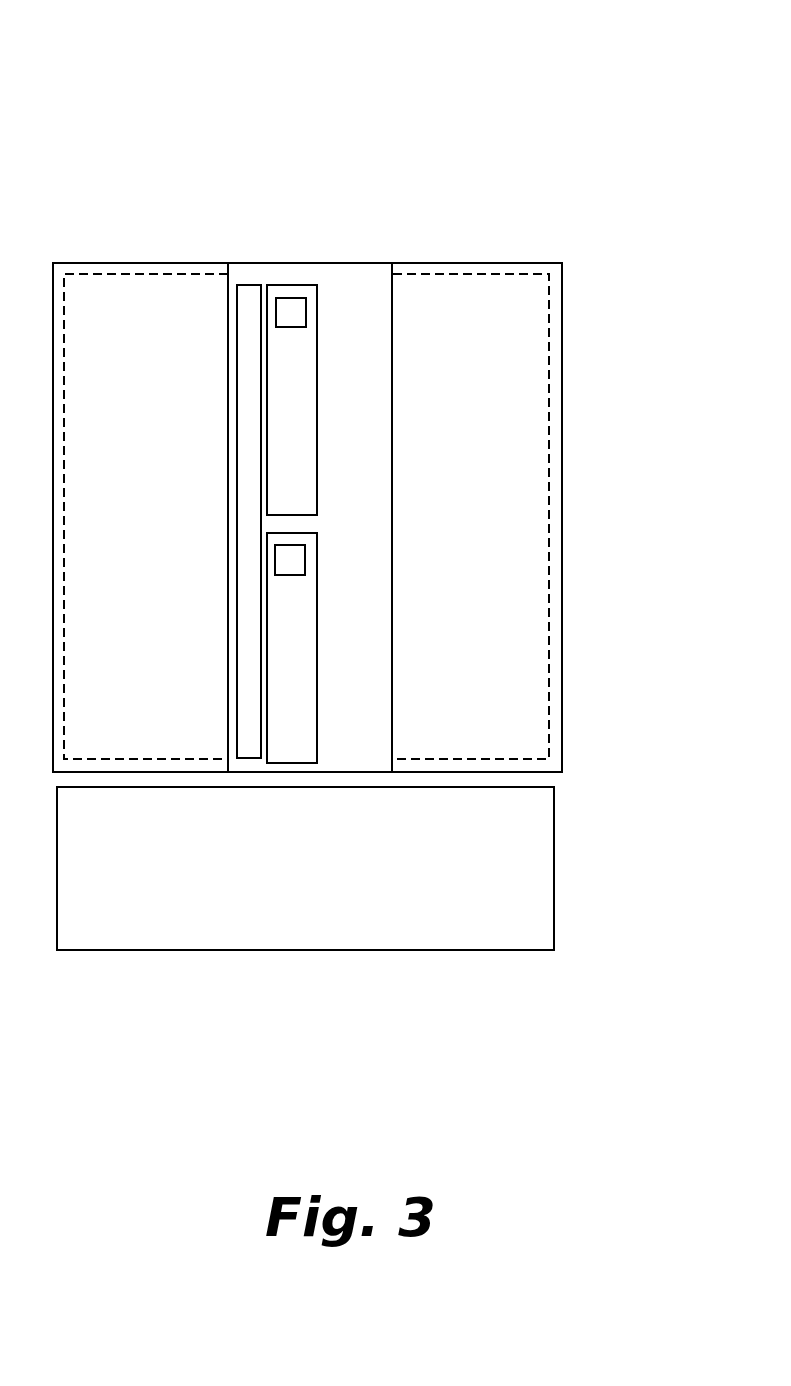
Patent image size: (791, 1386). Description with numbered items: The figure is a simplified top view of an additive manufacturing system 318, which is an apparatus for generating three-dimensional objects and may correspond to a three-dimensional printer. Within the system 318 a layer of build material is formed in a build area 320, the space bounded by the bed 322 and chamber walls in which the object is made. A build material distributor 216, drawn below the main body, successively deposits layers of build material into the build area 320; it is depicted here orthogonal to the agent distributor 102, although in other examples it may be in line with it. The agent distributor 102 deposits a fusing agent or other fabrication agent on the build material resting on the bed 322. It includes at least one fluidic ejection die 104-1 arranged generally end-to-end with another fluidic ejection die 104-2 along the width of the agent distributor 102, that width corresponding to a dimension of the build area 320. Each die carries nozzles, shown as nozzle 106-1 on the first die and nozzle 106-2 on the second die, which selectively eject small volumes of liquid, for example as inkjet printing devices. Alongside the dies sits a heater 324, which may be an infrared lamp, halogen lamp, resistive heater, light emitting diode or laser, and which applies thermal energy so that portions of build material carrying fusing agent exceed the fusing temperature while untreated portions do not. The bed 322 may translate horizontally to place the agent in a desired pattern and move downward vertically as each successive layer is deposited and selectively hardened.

The additive manufacturing system 318 is at (299, 86).
The agent distributor 102 is at (322, 272).
The build area 320 is at (88, 305).
The bed 322 is at (156, 268).
The heater 324 is at (259, 293).
The fluidic ejection die 104-1 is at (304, 334).
The nozzle 106-1 is at (296, 313).
The fluidic ejection die 104-2 is at (317, 593).
The nozzle 106-2 is at (317, 565).
The build material distributor 216 is at (530, 843).